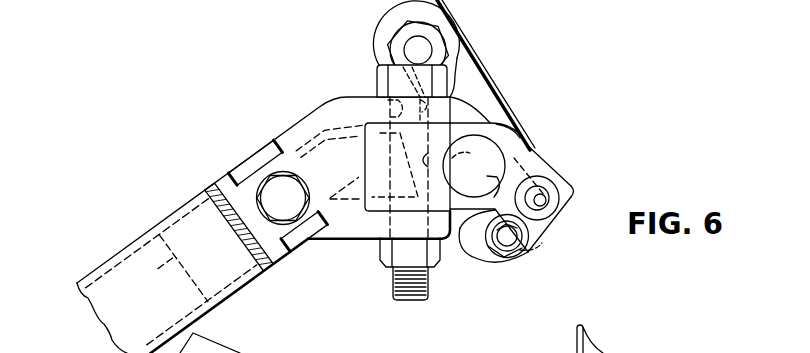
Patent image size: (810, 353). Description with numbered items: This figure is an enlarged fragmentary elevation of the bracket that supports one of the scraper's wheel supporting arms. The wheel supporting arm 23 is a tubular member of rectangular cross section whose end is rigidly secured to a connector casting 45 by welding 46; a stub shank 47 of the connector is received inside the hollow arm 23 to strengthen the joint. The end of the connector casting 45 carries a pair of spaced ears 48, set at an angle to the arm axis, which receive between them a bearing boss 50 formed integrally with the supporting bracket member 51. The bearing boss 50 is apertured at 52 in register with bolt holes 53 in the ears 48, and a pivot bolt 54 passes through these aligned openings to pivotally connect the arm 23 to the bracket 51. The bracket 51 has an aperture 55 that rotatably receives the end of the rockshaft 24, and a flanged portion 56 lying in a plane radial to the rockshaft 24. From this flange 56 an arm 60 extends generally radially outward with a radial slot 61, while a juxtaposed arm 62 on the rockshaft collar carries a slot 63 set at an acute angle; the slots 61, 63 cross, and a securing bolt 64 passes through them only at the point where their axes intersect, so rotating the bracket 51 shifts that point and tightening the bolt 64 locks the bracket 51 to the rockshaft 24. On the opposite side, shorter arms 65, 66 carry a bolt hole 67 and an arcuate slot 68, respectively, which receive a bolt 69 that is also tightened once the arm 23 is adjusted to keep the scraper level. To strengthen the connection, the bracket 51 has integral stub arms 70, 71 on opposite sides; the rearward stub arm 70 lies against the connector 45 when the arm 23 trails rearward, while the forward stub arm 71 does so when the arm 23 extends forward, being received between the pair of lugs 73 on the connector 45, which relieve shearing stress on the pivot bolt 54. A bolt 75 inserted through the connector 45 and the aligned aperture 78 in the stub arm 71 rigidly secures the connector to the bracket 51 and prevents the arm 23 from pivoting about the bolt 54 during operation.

The wheel supporting arm 23 is at (128, 272).
The rockshaft 24 is at (490, 156).
The connector casting 45 is at (309, 110).
The welding 46 is at (212, 197).
The stub shank 47 is at (173, 255).
The ears 48 is at (456, 100).
The bearing boss 50 is at (373, 163).
The supporting bracket member 51 is at (497, 116).
The aperture 52 is at (449, 160).
The bolt holes 53 is at (368, 97).
The pivot bolt 54 is at (421, 294).
The aperture 55 is at (480, 180).
The flanged portion 56 is at (523, 143).
The arm 60 is at (458, 66).
The slot 61 is at (449, 91).
The arm 62 is at (452, 65).
The slot 63 is at (400, 148).
The securing bolt 64 is at (437, 35).
The shorter arm 65 is at (477, 243).
The shorter arm 66 is at (490, 258).
The bolt hole 67 is at (512, 253).
The arcuate slot 68 is at (526, 248).
The bolt 69 is at (476, 228).
The stub arm 70 is at (300, 135).
The stub arm 71 is at (573, 184).
The lugs 73 is at (250, 170).
The bolt 75 is at (278, 201).
The aperture 78 is at (548, 198).